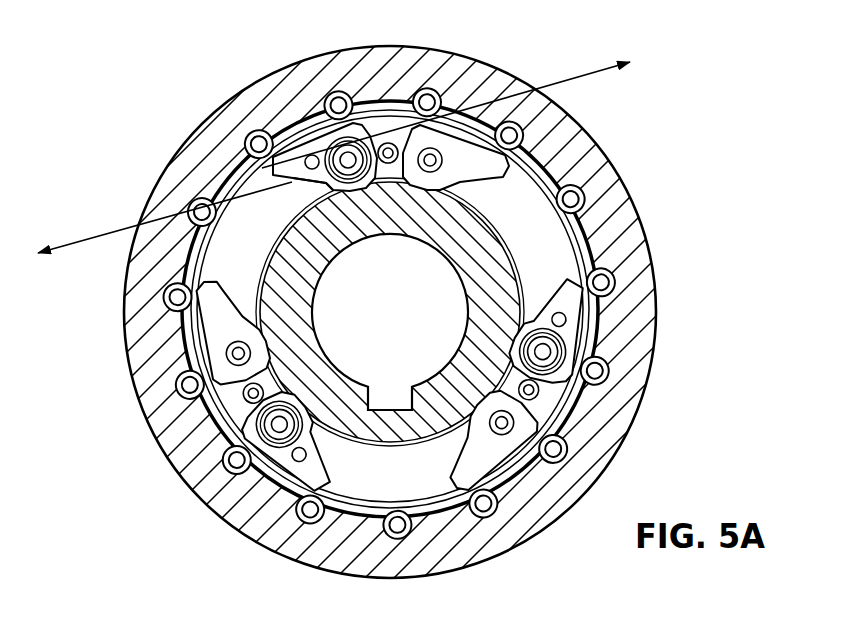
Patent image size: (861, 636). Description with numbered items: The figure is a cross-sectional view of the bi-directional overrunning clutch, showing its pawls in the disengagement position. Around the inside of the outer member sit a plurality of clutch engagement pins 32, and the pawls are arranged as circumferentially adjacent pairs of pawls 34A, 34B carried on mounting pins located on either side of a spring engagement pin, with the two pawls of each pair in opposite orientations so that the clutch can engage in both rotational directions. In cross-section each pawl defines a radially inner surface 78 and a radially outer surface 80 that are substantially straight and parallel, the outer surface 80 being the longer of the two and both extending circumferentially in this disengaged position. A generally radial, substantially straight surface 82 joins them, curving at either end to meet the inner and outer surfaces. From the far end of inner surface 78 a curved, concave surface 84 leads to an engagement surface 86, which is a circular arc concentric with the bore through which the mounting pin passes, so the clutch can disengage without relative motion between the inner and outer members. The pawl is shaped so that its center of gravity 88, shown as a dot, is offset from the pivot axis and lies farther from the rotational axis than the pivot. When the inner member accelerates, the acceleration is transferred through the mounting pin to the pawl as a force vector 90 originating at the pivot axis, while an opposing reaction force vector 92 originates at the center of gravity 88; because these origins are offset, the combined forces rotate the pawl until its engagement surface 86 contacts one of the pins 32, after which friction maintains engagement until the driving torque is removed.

The clutch engagement pin 32 is at (238, 137).
The pawl 34A is at (327, 141).
The pawl 34B is at (463, 163).
The radially inner surface 78 is at (359, 194).
The radially outer surface 80 is at (287, 141).
The surface 82 is at (376, 124).
The concave surface 84 is at (305, 187).
The engagement surface 86 is at (262, 165).
The center of gravity 88 is at (310, 147).
The force vector 90 is at (78, 237).
The reaction force vector 92 is at (563, 80).